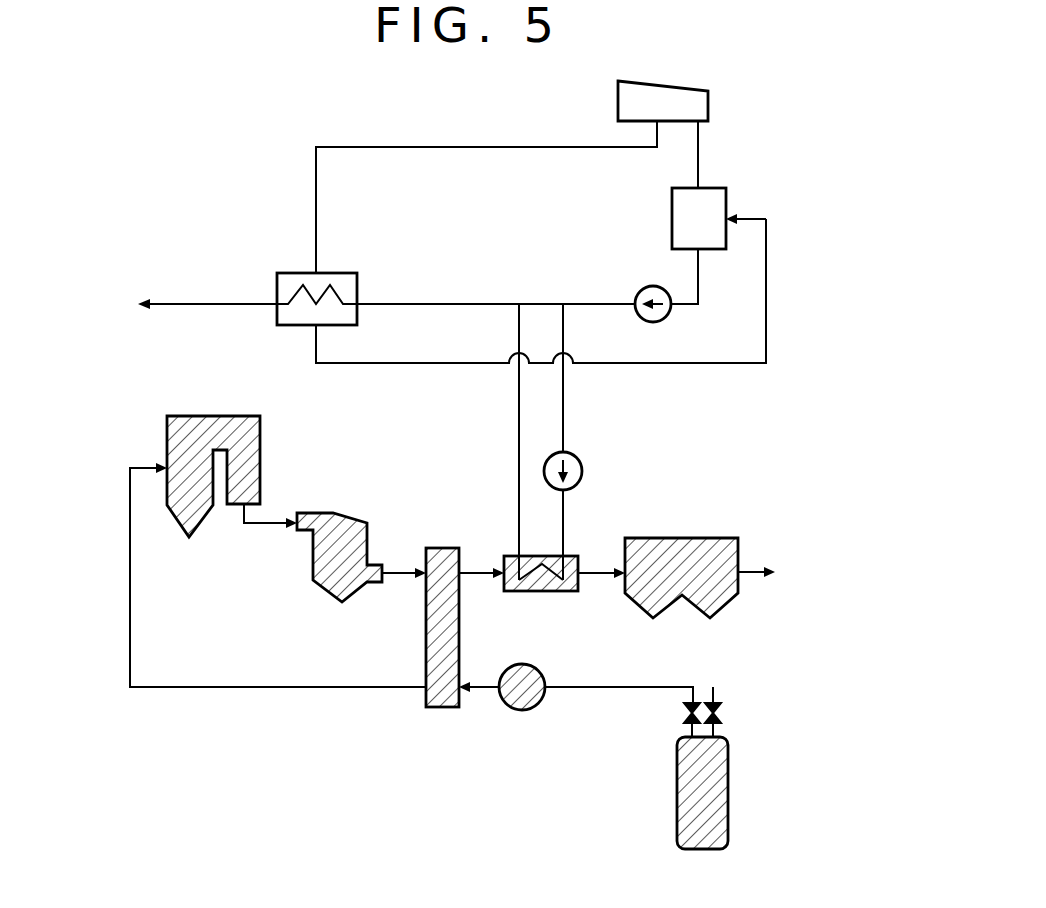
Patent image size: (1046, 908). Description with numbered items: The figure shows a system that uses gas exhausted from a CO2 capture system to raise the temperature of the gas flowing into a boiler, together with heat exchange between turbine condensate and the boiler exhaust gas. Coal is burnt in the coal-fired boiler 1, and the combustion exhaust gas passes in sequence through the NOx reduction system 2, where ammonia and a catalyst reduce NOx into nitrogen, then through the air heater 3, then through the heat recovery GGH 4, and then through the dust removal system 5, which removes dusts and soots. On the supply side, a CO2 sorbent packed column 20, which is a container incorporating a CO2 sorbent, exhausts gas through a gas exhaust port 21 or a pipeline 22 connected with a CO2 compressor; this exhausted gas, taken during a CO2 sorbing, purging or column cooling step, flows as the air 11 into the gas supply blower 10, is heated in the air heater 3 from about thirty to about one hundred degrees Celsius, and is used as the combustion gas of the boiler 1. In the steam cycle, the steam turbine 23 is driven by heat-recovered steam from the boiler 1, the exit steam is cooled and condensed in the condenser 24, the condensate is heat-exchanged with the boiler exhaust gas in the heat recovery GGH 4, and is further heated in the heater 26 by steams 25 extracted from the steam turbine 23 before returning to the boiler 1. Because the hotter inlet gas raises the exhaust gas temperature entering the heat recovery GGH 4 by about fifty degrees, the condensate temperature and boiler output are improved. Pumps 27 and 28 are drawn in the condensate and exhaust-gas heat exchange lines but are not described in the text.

The coal-fired boiler 1 is at (216, 416).
The NOx reduction system 2 is at (345, 513).
The air heater 3 is at (444, 548).
The heat recovery GGH 4 is at (540, 591).
The dust removal system 5 is at (681, 538).
The gas supply blower 10 is at (522, 711).
The air 11 is at (603, 690).
The CO2 sorbent packed column 20 is at (677, 797).
The gas exhaust port 21 is at (691, 727).
The pipeline 22 is at (716, 691).
The steam turbine 23 is at (708, 105).
The condenser 24 is at (726, 192).
The steams 25 is at (585, 150).
The heater 26 is at (357, 281).
The pump 27 is at (652, 286).
The pump 28 is at (583, 470).